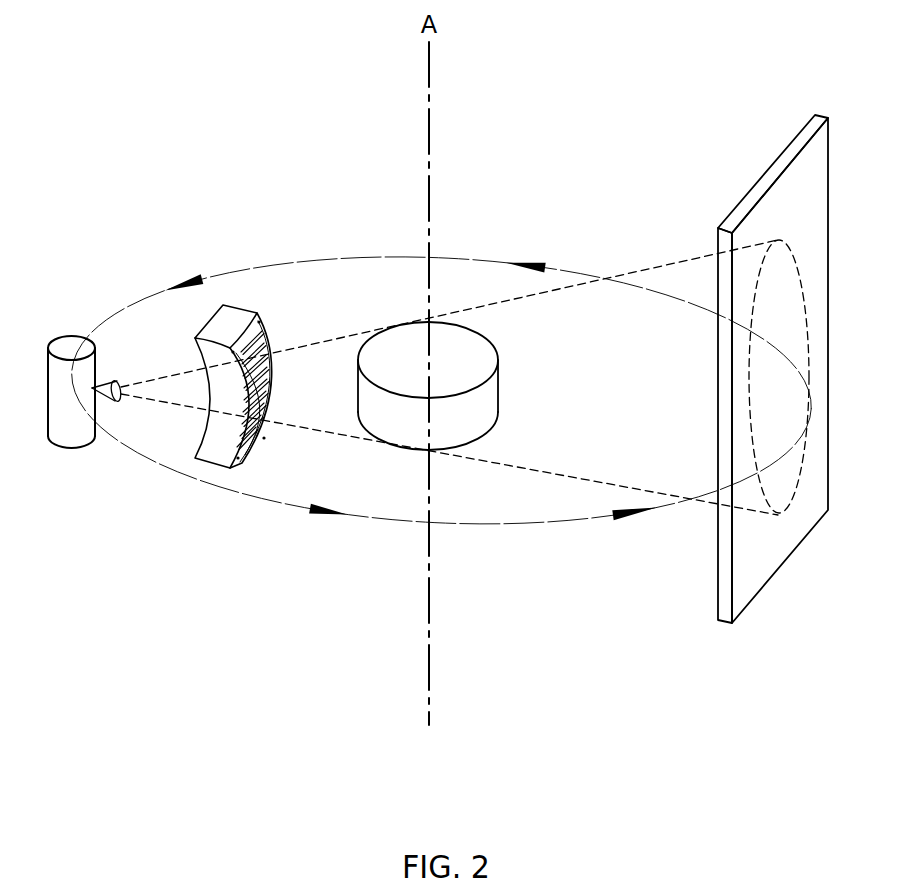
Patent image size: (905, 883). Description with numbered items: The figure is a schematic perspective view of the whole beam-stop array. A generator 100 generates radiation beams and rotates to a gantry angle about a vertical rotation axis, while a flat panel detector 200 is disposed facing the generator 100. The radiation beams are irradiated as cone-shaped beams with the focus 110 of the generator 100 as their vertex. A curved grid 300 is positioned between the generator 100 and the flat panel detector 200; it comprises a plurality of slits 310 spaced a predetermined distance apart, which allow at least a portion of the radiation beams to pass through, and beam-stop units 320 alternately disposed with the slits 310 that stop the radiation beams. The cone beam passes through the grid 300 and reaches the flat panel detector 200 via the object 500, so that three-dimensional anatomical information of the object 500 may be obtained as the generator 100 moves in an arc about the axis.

The generator 100 is at (65, 442).
The focus 110 is at (118, 406).
The flat panel detector 200 is at (768, 565).
The grid 300 is at (226, 440).
The slits 310 is at (250, 427).
The beam-stop units 320 is at (272, 400).
The object 500 is at (490, 420).